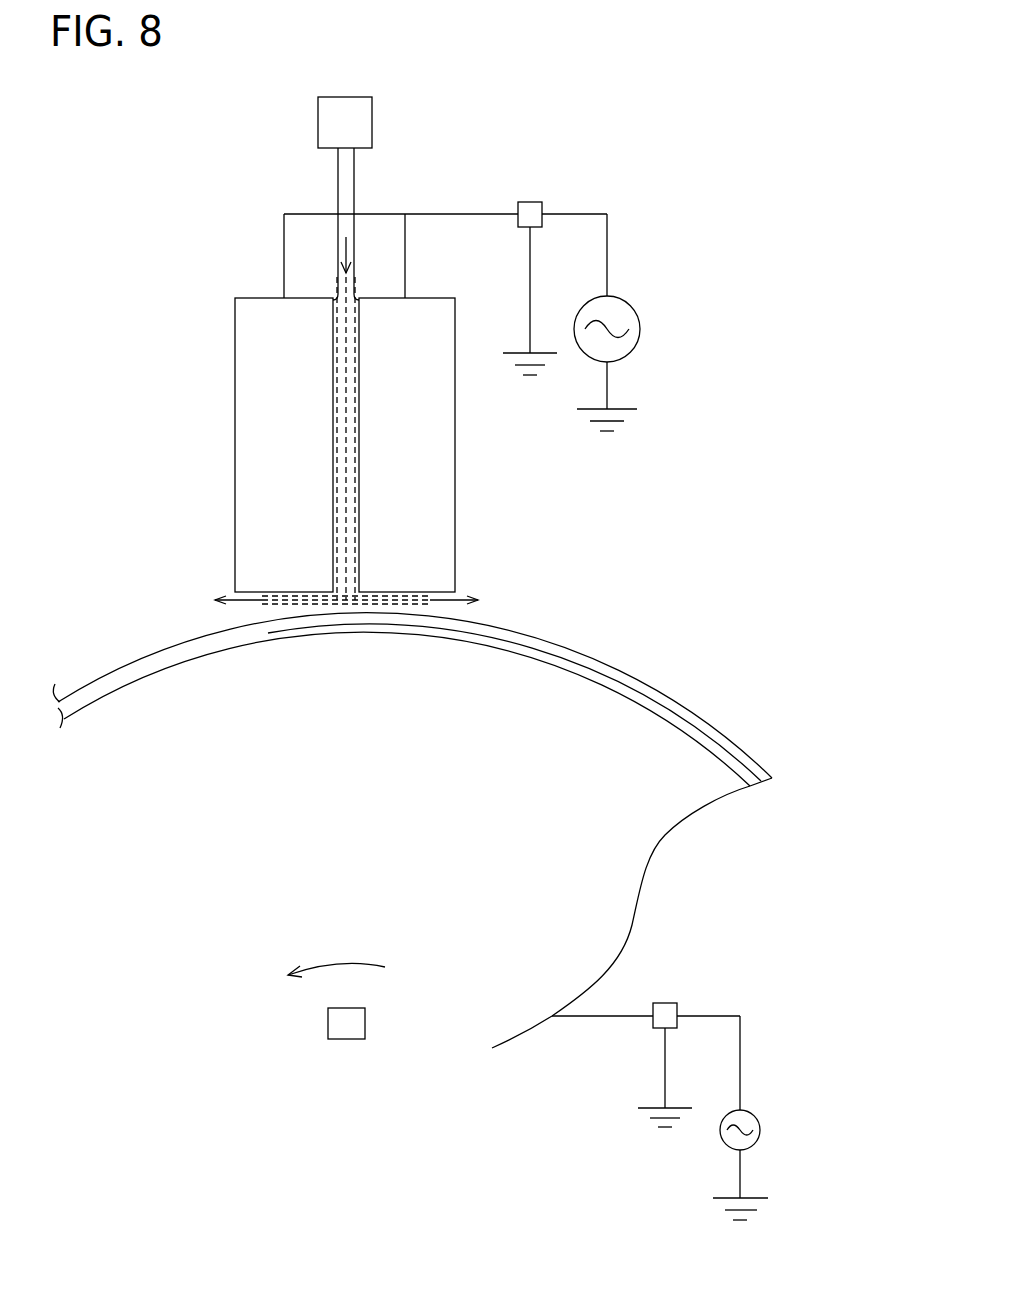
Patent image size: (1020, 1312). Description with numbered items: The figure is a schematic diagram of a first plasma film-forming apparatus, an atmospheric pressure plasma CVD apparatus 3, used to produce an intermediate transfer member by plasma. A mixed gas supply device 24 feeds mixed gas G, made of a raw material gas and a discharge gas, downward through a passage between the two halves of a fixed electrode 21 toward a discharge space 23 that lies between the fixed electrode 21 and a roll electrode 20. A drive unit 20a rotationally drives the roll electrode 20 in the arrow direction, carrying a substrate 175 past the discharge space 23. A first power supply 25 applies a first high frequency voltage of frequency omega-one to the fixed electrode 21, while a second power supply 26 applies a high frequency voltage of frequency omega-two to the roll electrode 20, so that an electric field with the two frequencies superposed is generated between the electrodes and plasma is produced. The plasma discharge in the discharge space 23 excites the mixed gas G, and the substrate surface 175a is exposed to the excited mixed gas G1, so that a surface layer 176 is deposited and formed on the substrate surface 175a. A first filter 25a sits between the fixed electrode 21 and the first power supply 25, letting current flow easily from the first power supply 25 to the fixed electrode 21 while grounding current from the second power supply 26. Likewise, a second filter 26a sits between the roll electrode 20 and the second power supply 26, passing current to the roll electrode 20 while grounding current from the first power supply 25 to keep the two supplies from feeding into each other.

The atmospheric pressure plasma CVD apparatus 3 is at (640, 205).
The mixed gas supply device 24 is at (344, 90).
The mixed gas G is at (356, 250).
The fixed electrode 21 is at (235, 465).
The discharge space 23 is at (387, 607).
The excited mixed gas G1 is at (298, 607).
The surface layer 176 is at (717, 738).
The substrate 175 is at (770, 776).
The substrate surface 175a is at (108, 678).
The roll electrode 20 is at (643, 852).
The drive unit 20a is at (387, 1020).
The first filter 25a is at (516, 220).
The first power supply 25 is at (640, 331).
The second filter 26a is at (663, 1002).
The second power supply 26 is at (762, 1129).